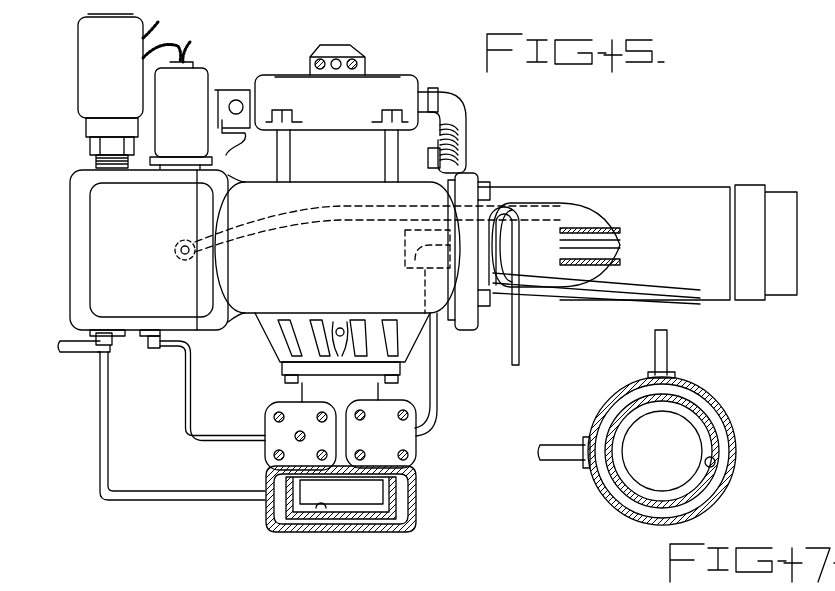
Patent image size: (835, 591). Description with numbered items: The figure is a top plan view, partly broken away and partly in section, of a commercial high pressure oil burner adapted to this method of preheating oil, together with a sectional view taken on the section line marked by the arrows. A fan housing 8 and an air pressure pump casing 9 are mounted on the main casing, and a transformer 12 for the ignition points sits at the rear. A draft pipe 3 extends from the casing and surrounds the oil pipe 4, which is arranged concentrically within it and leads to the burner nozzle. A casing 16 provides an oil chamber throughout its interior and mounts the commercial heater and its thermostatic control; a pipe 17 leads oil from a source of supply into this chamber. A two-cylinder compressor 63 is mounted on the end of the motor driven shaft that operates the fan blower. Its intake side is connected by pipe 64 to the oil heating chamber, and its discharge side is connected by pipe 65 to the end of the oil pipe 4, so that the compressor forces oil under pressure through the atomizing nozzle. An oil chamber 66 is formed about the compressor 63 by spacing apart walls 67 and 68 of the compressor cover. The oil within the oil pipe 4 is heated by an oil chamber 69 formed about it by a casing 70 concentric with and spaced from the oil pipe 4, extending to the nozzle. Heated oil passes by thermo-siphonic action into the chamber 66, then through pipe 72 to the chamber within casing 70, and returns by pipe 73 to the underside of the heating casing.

In FIG. 15, the draft pipe 3 is at (678, 193).
In FIG. 15, the oil pipe 4 is at (590, 240).
In FIG. 15, the fan housing 8 is at (283, 302).
In FIG. 15, the air pressure pump casing 9 is at (270, 346).
In FIG. 15, the transformer 12 is at (151, 250).
In FIG. 15, the casing 16 is at (70, 266).
In FIG. 15, the pipe 17 is at (73, 356).
In FIG. 15, the two-cylinder compressor 63 is at (368, 494).
In FIG. 17, the two-cylinder compressor 63 is at (690, 436).
In FIG. 15, the pipe 64 is at (220, 434).
In FIG. 15, the pipe 65 is at (440, 414).
In FIG. 15, the oil chamber 66 is at (418, 493).
In FIG. 17, the oil chamber 66 is at (712, 396).
In FIG. 15, the wall 67 is at (320, 510).
In FIG. 17, the wall 67 is at (737, 450).
In FIG. 15, the wall 68 is at (340, 528).
In FIG. 17, the wall 68 is at (714, 464).
In FIG. 15, the oil chamber 69 is at (596, 258).
In FIG. 15, the casing 70 is at (540, 228).
In FIG. 15, the pipe 72 is at (512, 348).
In FIG. 15, the pipe 73 is at (306, 230).